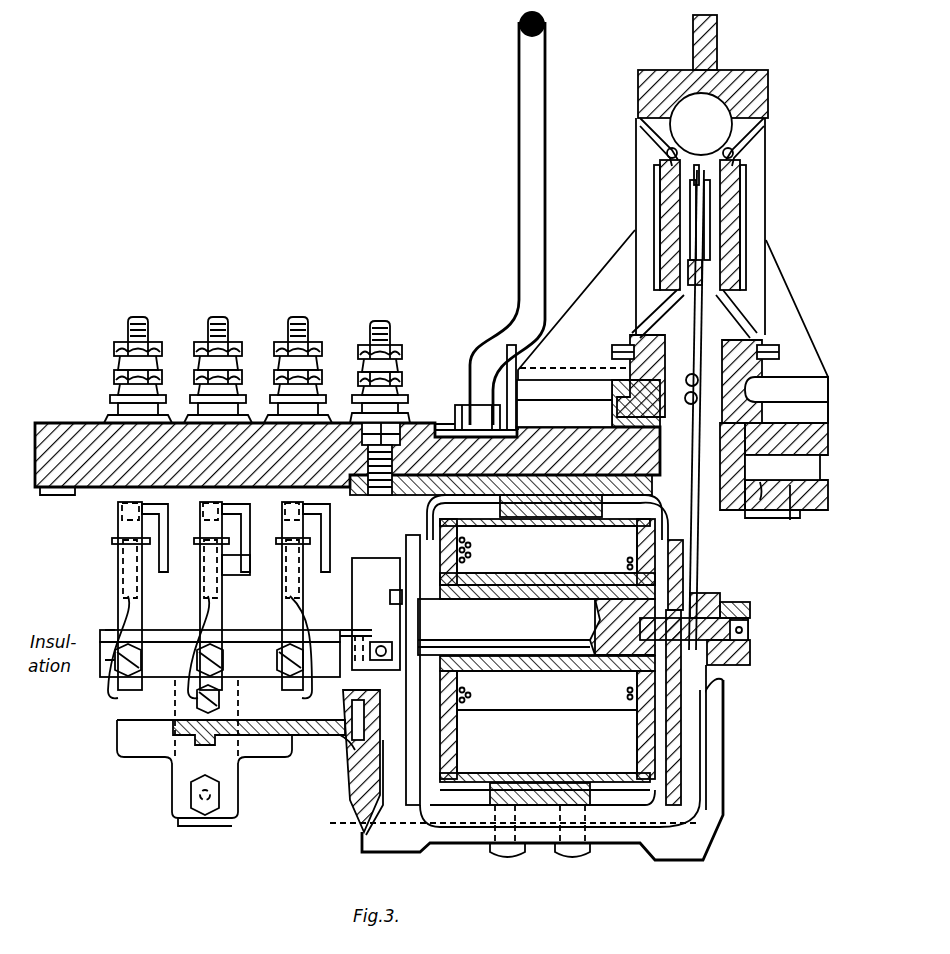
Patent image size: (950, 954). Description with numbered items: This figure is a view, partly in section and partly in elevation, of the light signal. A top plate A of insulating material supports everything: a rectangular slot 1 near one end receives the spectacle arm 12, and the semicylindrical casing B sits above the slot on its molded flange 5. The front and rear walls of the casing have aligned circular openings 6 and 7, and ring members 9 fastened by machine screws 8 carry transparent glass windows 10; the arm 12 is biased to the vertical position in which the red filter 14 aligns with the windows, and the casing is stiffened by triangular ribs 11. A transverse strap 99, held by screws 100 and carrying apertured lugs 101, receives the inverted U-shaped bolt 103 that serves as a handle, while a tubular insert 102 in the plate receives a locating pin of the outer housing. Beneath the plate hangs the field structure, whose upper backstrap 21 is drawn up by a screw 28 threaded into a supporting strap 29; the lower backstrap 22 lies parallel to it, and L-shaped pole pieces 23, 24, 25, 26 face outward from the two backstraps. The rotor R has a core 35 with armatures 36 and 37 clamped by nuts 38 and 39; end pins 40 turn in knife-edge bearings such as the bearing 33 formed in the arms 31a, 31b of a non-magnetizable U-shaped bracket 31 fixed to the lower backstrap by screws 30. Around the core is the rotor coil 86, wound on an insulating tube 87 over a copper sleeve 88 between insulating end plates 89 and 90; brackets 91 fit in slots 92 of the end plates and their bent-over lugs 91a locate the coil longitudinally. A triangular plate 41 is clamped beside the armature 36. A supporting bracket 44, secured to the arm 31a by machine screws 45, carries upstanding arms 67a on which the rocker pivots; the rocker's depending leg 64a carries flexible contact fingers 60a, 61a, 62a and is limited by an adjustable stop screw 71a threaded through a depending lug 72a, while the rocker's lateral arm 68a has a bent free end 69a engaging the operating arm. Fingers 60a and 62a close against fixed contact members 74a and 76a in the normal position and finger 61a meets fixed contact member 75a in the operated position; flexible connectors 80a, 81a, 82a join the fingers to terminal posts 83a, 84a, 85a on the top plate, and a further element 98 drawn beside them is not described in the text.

The casing B is at (638, 90).
The circular opening 6 is at (645, 125).
The circular opening 7 is at (752, 132).
The circular window 10 is at (668, 213).
The filter 14 is at (705, 210).
The spectacle arm 12 is at (713, 468).
The ring member 9 is at (662, 310).
The machine screw 8 is at (615, 348).
The flange 5 is at (760, 392).
The triangular strengthening rib 11 is at (585, 298).
The inverted U-shaped bolt 103 is at (519, 96).
The upstanding apertured lug 101 is at (505, 378).
The screw 100 is at (462, 405).
The transversely extending strap 99 is at (448, 427).
The top plate A is at (70, 423).
The supporting strap 29 is at (418, 495).
The rectangular slot 1 is at (725, 512).
The tubular insert 102 is at (787, 510).
The terminal post 83a is at (130, 330).
The terminal post 84a is at (210, 330).
The terminal post 85a is at (290, 330).
The terminal screw 98 is at (372, 335).
The screw 28 is at (378, 496).
The slot 92 is at (480, 507).
The bracket 91 is at (620, 512).
The lug 91a is at (408, 537).
The backstrap 21 is at (548, 530).
The rotor coil 86 is at (478, 552).
The tube of insulation 87 is at (565, 575).
The sleeve 88 is at (603, 575).
The rotor R is at (536, 627).
The core 35 is at (530, 660).
The insulating end plate 89 is at (460, 690).
The pole piece 24 is at (435, 722).
The insulating end plate 90 is at (636, 745).
The backstrap 22 is at (610, 800).
The pole piece 25 is at (428, 795).
The armature 37 is at (683, 815).
The pole piece 26 is at (490, 818).
The screw 30 is at (525, 855).
The bracket 31 is at (470, 845).
The arm 31b is at (726, 740).
The arm 31a is at (358, 818).
The pole piece 23 is at (680, 735).
The armature 36 is at (398, 828).
The nut 39 is at (690, 603).
The knife-edge bearing 33 is at (730, 604).
The end pin 40 is at (749, 628).
The nut 38 is at (395, 598).
The triangular plate 41 is at (395, 622).
The arm 68a is at (368, 640).
The free end 69a is at (368, 652).
The flexible connector 80a is at (122, 583).
The flexible connector 81a is at (203, 592).
The flexible connector 82a is at (302, 600).
The fixed contact member 74a is at (180, 540).
The fixed contact member 75a is at (260, 545).
The fixed contact member 76a is at (340, 548).
The contact finger 60a is at (122, 625).
The contact finger 61a is at (200, 628).
The contact finger 62a is at (282, 622).
The upstanding arm 67a is at (125, 700).
The machine screw 45 is at (335, 712).
The supporting bracket 44 is at (145, 760).
The adjustable stop screw 71a is at (222, 800).
The depending leg 64a is at (180, 812).
The depending lug 72a is at (220, 826).